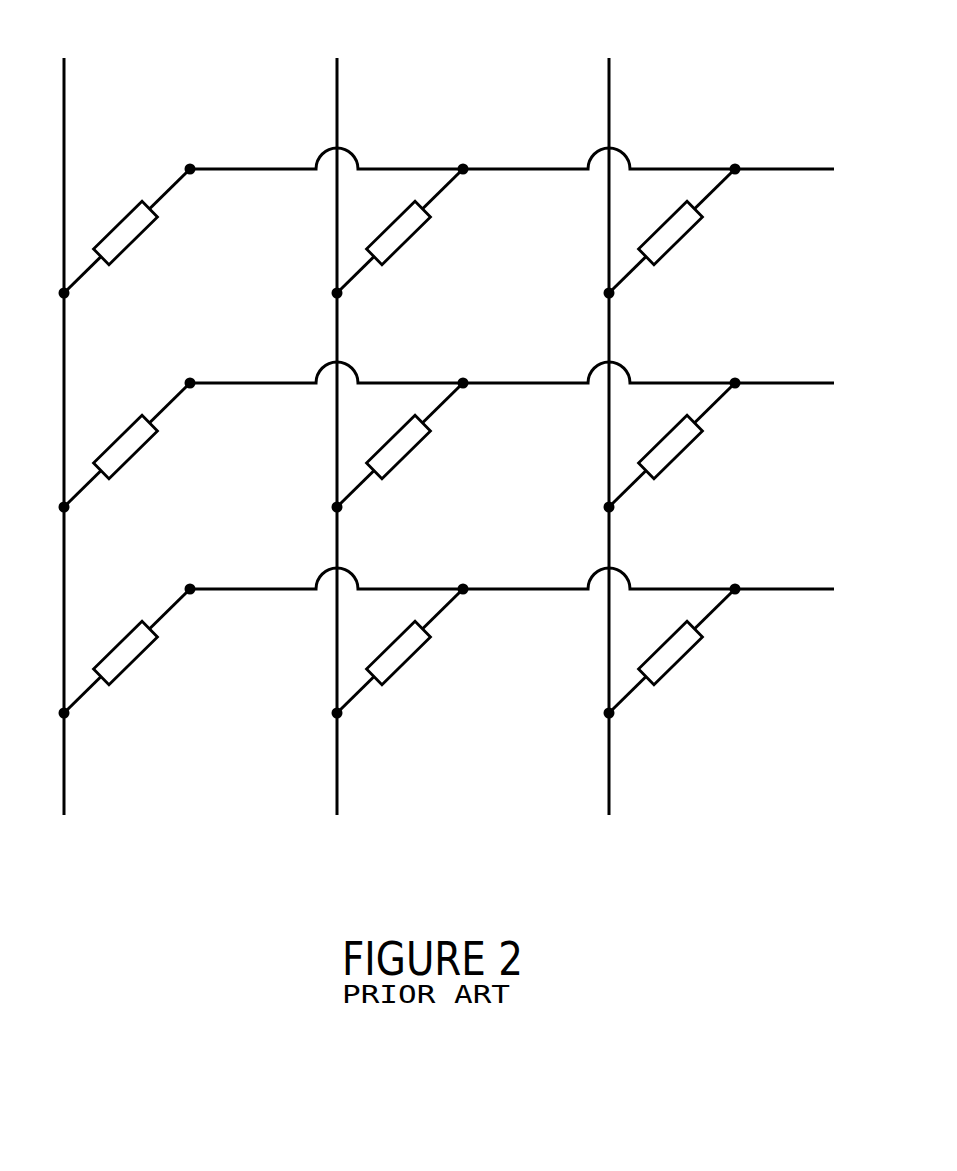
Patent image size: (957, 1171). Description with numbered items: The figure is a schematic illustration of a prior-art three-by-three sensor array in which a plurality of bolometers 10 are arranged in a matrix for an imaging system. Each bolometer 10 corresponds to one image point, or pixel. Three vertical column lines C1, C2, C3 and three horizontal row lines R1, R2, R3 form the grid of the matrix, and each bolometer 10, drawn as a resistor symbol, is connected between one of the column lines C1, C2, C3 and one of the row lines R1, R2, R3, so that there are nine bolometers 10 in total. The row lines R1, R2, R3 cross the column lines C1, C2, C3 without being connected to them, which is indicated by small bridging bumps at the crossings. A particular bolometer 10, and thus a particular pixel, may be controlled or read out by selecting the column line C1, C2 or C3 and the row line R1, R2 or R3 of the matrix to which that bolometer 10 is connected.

The bolometer 10 is at (430, 441).
The column line C1 is at (61, 411).
The column line C2 is at (337, 411).
The column line C3 is at (607, 411).
The row line R1 is at (532, 170).
The row line R2 is at (532, 384).
The row line R3 is at (532, 590).